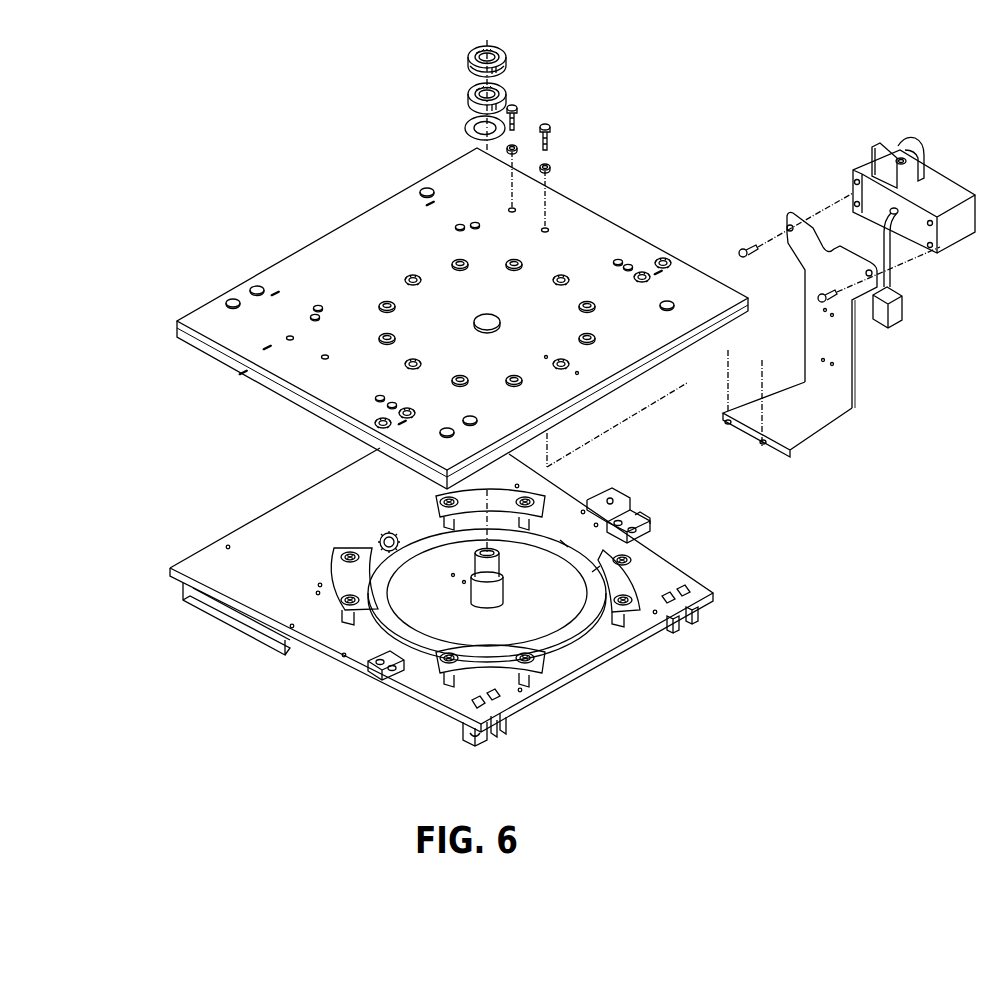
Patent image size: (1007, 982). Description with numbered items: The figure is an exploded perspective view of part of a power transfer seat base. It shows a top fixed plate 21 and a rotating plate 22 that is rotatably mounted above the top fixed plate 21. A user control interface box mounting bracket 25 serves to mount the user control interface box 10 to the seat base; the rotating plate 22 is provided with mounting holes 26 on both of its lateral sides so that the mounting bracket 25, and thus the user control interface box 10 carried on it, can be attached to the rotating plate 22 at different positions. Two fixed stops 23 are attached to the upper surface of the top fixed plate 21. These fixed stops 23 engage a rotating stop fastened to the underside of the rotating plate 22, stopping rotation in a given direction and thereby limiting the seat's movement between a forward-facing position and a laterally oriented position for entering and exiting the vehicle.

The user control interface box 10 is at (948, 187).
The top fixed plate 21 is at (200, 565).
The rotating plate 22 is at (327, 255).
The fixed stops 23 is at (380, 674).
The user control interface box mounting bracket 25 is at (843, 355).
The mounting holes 26 is at (547, 228).